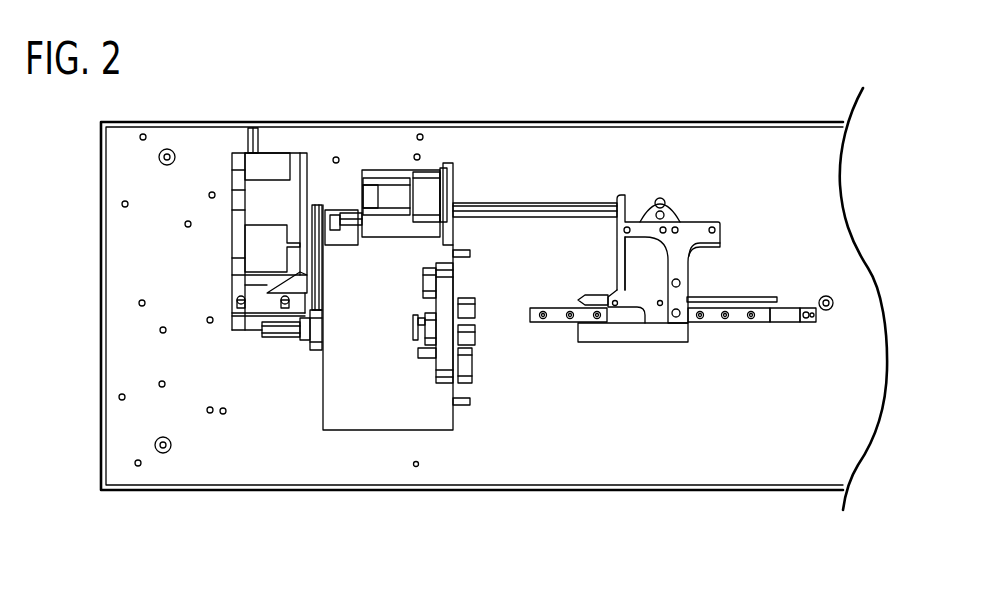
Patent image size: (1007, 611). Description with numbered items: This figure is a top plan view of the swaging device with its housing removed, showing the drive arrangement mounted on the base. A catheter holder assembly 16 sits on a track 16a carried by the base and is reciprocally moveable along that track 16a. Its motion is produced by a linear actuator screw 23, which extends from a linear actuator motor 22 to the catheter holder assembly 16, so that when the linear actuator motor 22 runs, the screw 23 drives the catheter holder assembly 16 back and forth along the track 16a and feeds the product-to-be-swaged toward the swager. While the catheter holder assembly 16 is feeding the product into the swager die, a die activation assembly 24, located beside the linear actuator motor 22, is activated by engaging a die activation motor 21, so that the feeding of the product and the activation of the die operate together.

The catheter holder assembly 16 is at (647, 300).
The track 16a is at (765, 320).
The die activation motor 21 is at (278, 208).
The linear actuator motor 22 is at (430, 193).
The linear actuator screw 23 is at (537, 207).
The die activation assembly 24 is at (453, 448).